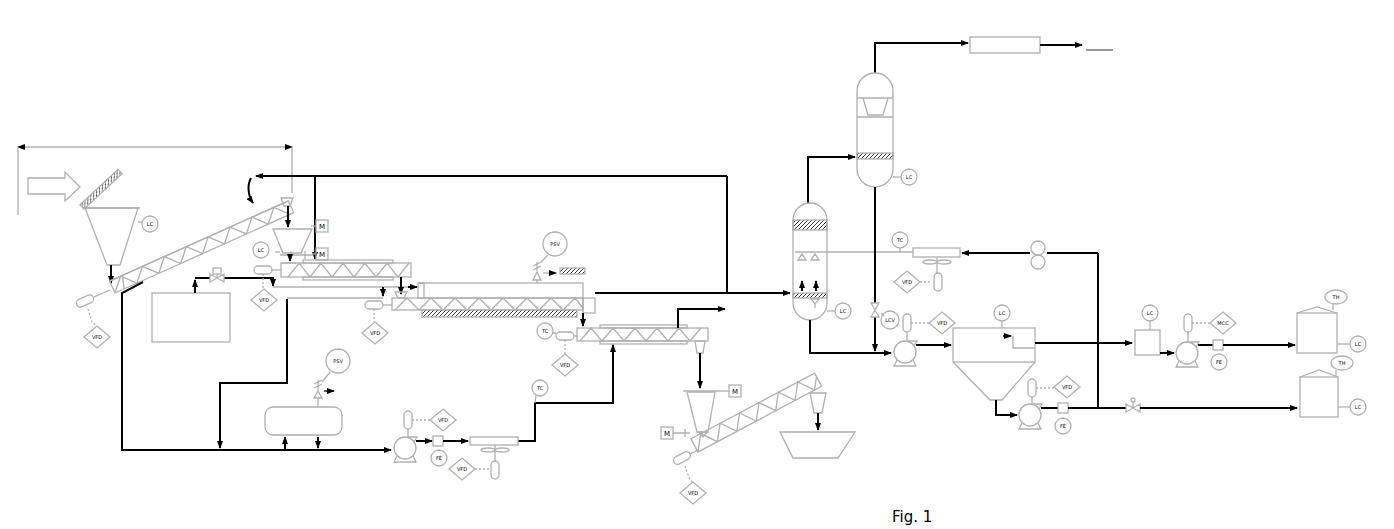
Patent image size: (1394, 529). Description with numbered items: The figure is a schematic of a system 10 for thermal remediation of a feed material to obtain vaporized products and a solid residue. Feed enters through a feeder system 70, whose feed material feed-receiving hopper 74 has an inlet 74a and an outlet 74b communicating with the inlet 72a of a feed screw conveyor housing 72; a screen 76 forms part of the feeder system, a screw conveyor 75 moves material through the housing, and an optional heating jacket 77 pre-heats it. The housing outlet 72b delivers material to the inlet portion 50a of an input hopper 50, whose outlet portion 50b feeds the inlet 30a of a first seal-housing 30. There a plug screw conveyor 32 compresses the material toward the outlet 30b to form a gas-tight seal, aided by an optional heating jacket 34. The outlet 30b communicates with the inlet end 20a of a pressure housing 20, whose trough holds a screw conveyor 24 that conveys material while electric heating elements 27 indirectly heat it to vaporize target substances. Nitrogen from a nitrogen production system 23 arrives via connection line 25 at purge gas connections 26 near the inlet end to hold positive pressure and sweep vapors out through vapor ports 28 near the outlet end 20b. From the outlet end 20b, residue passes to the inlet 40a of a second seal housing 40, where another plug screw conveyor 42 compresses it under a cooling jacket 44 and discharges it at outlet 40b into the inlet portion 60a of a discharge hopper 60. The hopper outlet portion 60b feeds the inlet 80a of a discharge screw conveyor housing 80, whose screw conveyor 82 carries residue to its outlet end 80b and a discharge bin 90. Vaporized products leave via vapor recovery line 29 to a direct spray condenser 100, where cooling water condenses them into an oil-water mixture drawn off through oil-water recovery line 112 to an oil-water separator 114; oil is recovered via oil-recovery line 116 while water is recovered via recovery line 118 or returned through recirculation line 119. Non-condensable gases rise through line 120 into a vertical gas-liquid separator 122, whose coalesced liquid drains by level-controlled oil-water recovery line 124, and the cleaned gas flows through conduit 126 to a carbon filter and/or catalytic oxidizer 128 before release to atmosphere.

The system 10 is at (558, 141).
The pressure housing 20 is at (576, 286).
The inlet end 20a is at (400, 309).
The outlet end 20b is at (596, 305).
The nitrogen production system 23 is at (178, 339).
The screw conveyor 24 is at (493, 302).
The connection line 25 is at (309, 299).
The purge gas connections 26 is at (420, 285).
The electric heating elements 27 is at (497, 318).
The vapor ports 28 is at (584, 287).
The vapor recovery line 29 is at (618, 292).
The first seal-housing 30 is at (346, 275).
The inlet 30a is at (287, 277).
The outlet 30b is at (411, 268).
The plug screw conveyor 32 is at (357, 263).
The heating jacket 34 is at (342, 280).
The second seal housing 40 is at (636, 348).
The inlet 40a is at (581, 340).
The outlet 40b is at (707, 333).
The plug screw conveyor 42 is at (637, 343).
The cooling jacket 44 is at (652, 344).
The input hopper 50 is at (282, 236).
The inlet portion 50a is at (293, 228).
The outlet portion 50b is at (307, 246).
The discharge hopper 60 is at (702, 404).
The inlet portion 60a is at (706, 389).
The outlet portion 60b is at (710, 430).
The feeder system 70 is at (150, 148).
The feed screw conveyor housing 72 is at (192, 244).
The inlet 72a is at (110, 282).
The outlet 72b is at (290, 203).
The feed material feed-receiving hopper 74 is at (110, 248).
The inlet 74a is at (118, 209).
The outlet 74b is at (110, 268).
The screw conveyor 75 is at (225, 233).
The screen 76 is at (102, 182).
The heating jacket 77 is at (171, 244).
The discharge screw conveyor housing 80 is at (764, 438).
The inlet 80a is at (705, 450).
The outlet end 80b is at (823, 385).
The screw conveyor 82 is at (750, 430).
The discharge bin 90 is at (837, 447).
The direct spray condenser 100 is at (793, 270).
The oil-water recovery line 112 is at (805, 332).
The oil-water separator 114 is at (972, 375).
The oil-recovery line 116 is at (1070, 343).
The recovery line 118 is at (1167, 408).
The recirculation line 119 is at (1100, 273).
The line 120 is at (805, 185).
The vertical gas-liquid separator 122 is at (894, 127).
The oil-water recovery line 124 is at (876, 215).
The conduit 126 is at (902, 40).
The carbon filter and/or catalytic oxidizer 128 is at (995, 35).